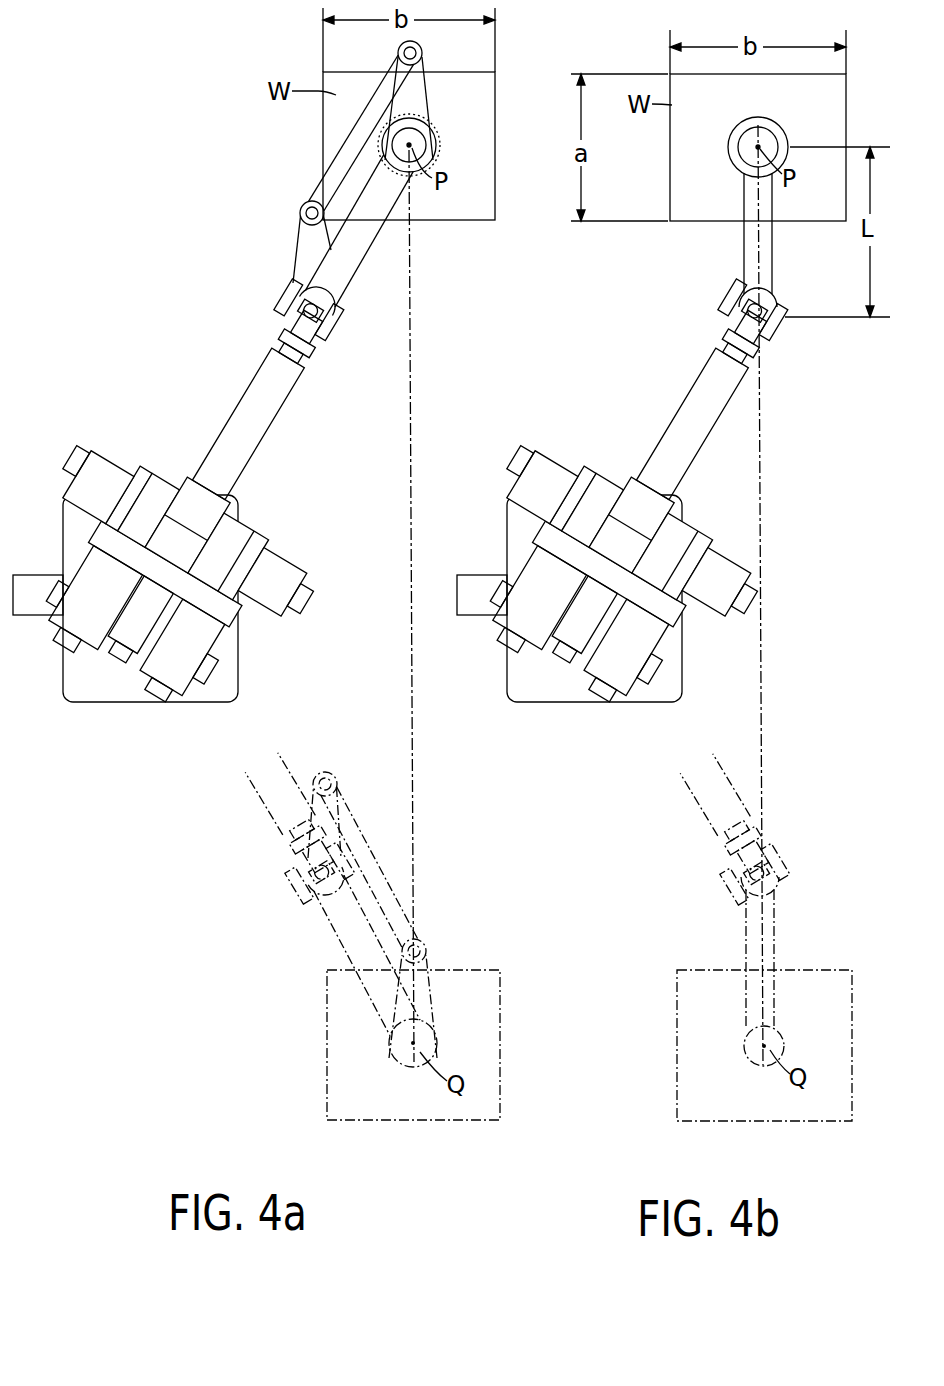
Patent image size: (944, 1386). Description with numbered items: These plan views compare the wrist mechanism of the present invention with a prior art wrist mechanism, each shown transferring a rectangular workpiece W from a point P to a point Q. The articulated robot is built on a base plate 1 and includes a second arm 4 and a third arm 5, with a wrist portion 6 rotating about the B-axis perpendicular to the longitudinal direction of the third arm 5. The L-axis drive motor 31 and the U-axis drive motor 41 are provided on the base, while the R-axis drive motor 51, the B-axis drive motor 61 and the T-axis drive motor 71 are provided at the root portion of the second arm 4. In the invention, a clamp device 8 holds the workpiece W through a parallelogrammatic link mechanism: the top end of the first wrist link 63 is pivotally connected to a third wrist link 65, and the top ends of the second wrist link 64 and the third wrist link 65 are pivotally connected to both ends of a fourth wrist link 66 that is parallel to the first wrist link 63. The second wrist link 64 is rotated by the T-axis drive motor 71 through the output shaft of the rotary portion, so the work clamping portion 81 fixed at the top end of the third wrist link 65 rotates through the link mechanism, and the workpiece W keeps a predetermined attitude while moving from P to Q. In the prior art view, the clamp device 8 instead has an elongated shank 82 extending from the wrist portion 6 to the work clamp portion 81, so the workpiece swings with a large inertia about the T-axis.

In FIG. 4a, the base plate 1 is at (236, 690).
In FIG. 4b, the base plate 1 is at (683, 690).
In FIG. 4a, the second arm 4 is at (256, 443).
In FIG. 4b, the second arm 4 is at (698, 457).
In FIG. 4a, the third arm 5 is at (283, 351).
In FIG. 4b, the third arm 5 is at (722, 360).
In FIG. 4a, the wrist portion 6 is at (342, 318).
In FIG. 4b, the wrist portion 6 is at (780, 330).
In FIG. 4b, the clamp device 8 is at (742, 240).
In FIG. 4a, the L-axis drive motor 31 is at (290, 573).
In FIG. 4b, the L-axis drive motor 31 is at (723, 572).
In FIG. 4a, the U-axis drive motor 41 is at (119, 470).
In FIG. 4b, the U-axis drive motor 41 is at (534, 472).
In FIG. 4a, the R-axis drive motor 51 is at (166, 682).
In FIG. 4b, the R-axis drive motor 51 is at (606, 690).
In FIG. 4a, the B-axis drive motor 61 is at (66, 633).
In FIG. 4b, the B-axis drive motor 61 is at (485, 633).
In FIG. 4a, the T-axis drive motor 71 is at (125, 684).
In FIG. 4b, the T-axis drive motor 71 is at (570, 684).
In FIG. 4a, the first wrist link 63 is at (352, 266).
In FIG. 4a, the second wrist link 64 is at (300, 247).
In FIG. 4a, the third wrist link 65 is at (418, 78).
In FIG. 4a, the fourth wrist link 66 is at (334, 172).
In FIG. 4a, the work clamping portion 81 is at (438, 145).
In FIG. 4b, the work clamping portion 81 is at (728, 147).
In FIG. 4b, the elongated shank 82 is at (772, 258).